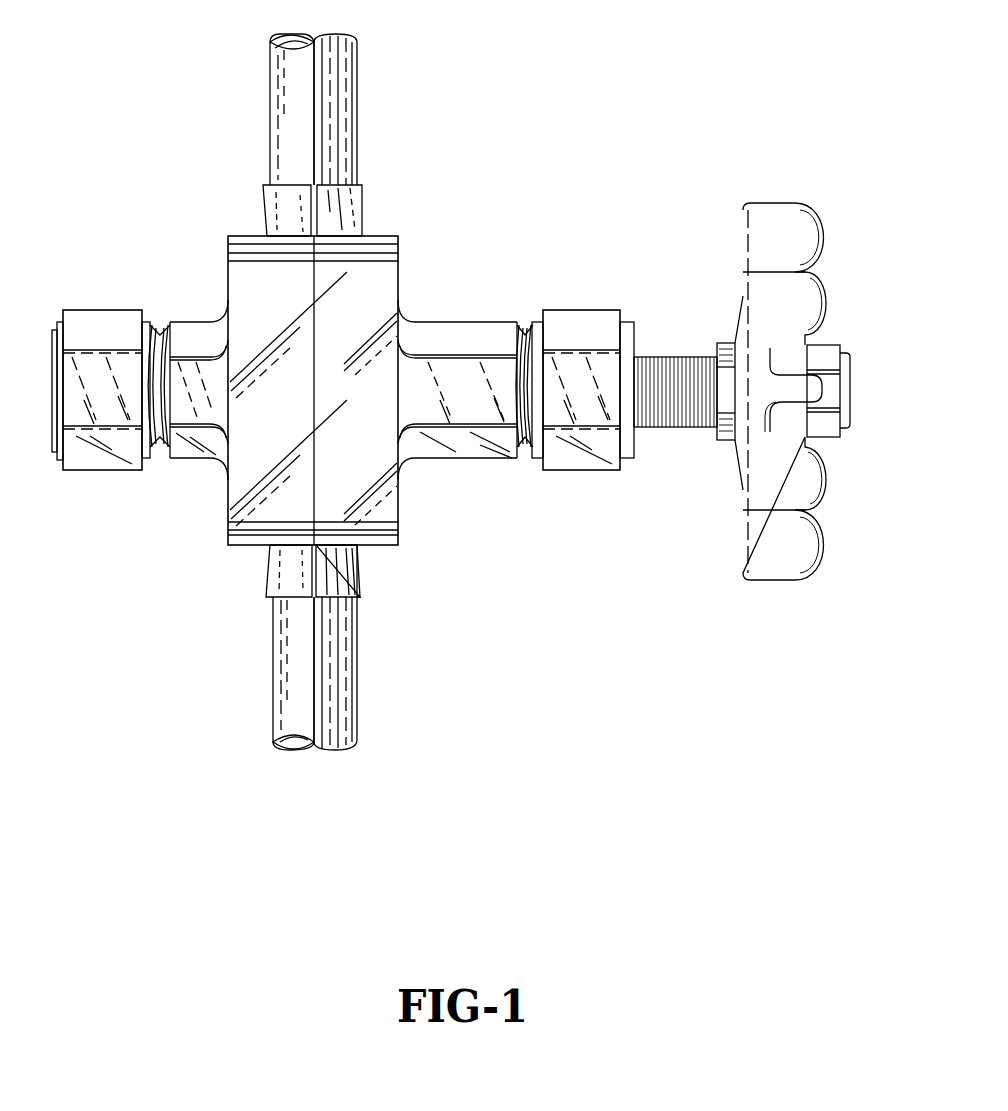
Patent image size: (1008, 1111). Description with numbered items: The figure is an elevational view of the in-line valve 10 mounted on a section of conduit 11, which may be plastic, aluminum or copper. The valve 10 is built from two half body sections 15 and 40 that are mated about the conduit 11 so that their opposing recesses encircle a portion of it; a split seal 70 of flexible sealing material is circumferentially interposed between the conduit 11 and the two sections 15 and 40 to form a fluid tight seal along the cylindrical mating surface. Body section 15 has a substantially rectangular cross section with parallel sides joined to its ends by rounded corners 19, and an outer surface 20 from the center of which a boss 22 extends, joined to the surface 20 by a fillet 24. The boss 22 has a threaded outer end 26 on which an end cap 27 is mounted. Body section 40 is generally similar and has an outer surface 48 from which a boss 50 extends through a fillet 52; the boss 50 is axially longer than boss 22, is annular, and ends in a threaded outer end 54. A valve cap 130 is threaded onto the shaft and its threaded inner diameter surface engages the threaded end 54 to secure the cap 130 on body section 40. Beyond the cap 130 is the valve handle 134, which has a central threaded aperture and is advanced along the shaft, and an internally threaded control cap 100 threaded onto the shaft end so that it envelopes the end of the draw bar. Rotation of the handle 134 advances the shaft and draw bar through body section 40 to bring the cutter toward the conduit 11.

The in-line valve 10 is at (486, 240).
The conduit 11 is at (352, 118).
The half body section 15 is at (258, 535).
The rounded corners 19 is at (372, 248).
The outer surface 20 is at (228, 276).
The boss 22 is at (176, 462).
The fillet 24 is at (218, 456).
The threaded outer end 26 is at (160, 332).
The end cap 27 is at (110, 462).
The half body section 40 is at (375, 540).
The outer surface 48 is at (400, 500).
The boss 50 is at (487, 452).
The fillet 52 is at (403, 317).
The threaded outer end 54 is at (522, 335).
The split seal 70 is at (352, 585).
The control cap 100 is at (823, 346).
The valve cap 130 is at (570, 465).
The valve handle 134 is at (780, 213).